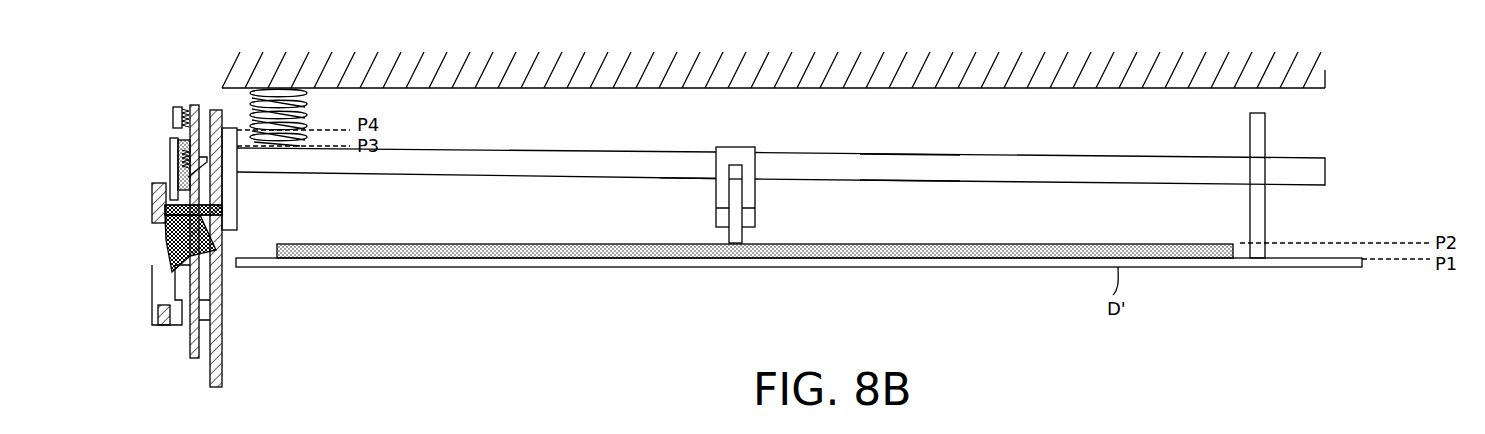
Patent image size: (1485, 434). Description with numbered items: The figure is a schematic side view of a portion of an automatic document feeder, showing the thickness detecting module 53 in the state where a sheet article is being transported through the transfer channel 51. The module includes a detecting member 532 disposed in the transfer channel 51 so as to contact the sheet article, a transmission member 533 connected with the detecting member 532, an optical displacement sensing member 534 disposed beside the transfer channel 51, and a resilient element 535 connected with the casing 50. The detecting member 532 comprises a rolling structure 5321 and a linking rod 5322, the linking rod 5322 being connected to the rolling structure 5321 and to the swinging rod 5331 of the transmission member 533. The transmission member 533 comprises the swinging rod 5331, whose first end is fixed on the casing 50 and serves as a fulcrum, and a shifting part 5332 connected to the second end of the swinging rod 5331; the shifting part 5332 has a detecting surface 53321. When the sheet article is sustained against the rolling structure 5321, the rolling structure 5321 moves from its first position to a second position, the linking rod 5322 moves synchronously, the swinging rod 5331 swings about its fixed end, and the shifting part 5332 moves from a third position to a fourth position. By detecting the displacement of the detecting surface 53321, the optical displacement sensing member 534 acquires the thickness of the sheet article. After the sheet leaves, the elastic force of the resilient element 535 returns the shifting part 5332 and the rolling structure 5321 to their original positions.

The casing 50 is at (442, 62).
The transfer channel 51 is at (765, 240).
The thickness detecting module 53 is at (1335, 131).
The detecting member 532 is at (702, 212).
The rolling structure 5321 is at (737, 242).
The linking rod 5322 is at (743, 160).
The transmission member 533 is at (1008, 160).
The swinging rod 5331 is at (898, 172).
The shifting part 5332 is at (228, 177).
The detecting surface 53321 is at (223, 202).
The optical displacement sensing member 534 is at (179, 95).
The resilient element 535 is at (290, 112).